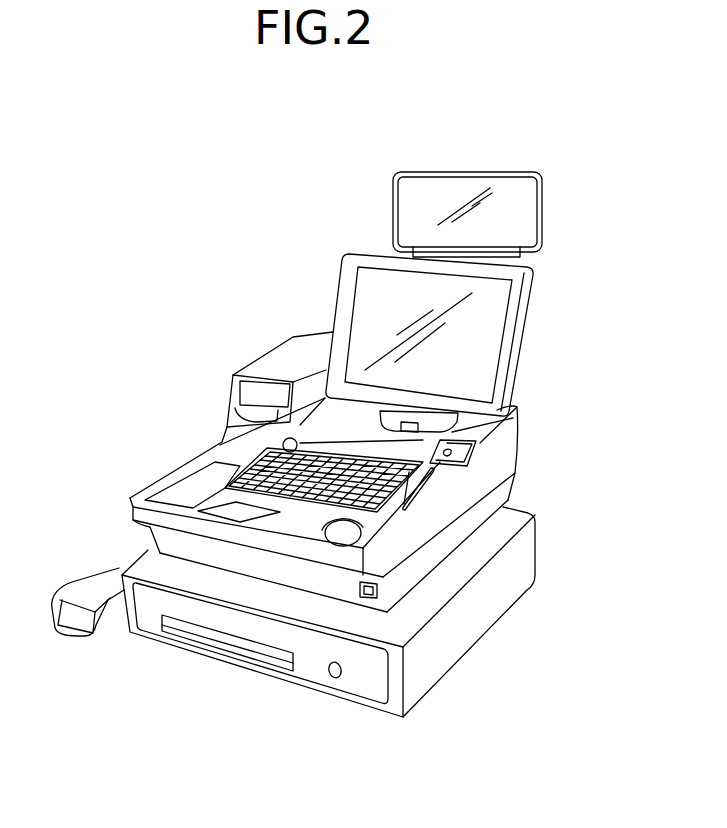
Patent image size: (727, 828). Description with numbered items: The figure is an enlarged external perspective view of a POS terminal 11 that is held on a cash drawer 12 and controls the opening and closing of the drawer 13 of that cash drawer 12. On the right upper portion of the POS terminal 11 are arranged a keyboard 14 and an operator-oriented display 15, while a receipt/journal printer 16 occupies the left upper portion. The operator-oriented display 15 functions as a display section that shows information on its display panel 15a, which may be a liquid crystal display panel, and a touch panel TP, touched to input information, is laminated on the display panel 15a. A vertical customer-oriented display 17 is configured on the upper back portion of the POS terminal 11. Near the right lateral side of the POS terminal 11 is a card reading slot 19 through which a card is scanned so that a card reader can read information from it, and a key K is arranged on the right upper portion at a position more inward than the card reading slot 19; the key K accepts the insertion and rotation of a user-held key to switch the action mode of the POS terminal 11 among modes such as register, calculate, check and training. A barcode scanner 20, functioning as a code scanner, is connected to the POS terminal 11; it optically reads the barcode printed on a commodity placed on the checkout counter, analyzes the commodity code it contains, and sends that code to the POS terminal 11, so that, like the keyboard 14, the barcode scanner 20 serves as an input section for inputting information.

The POS terminal 11 is at (150, 412).
The cash drawer 12 is at (470, 635).
The drawer 13 is at (358, 683).
The keyboard 14 is at (275, 506).
The operator-oriented display 15 is at (448, 307).
The display panel 15a is at (447, 293).
The receipt/journal printer 16 is at (282, 356).
The customer-oriented display 17 is at (442, 175).
The card reading slot 19 is at (395, 530).
The barcode scanner 20 is at (73, 597).
The touch panel TP is at (492, 324).
The key K is at (447, 453).